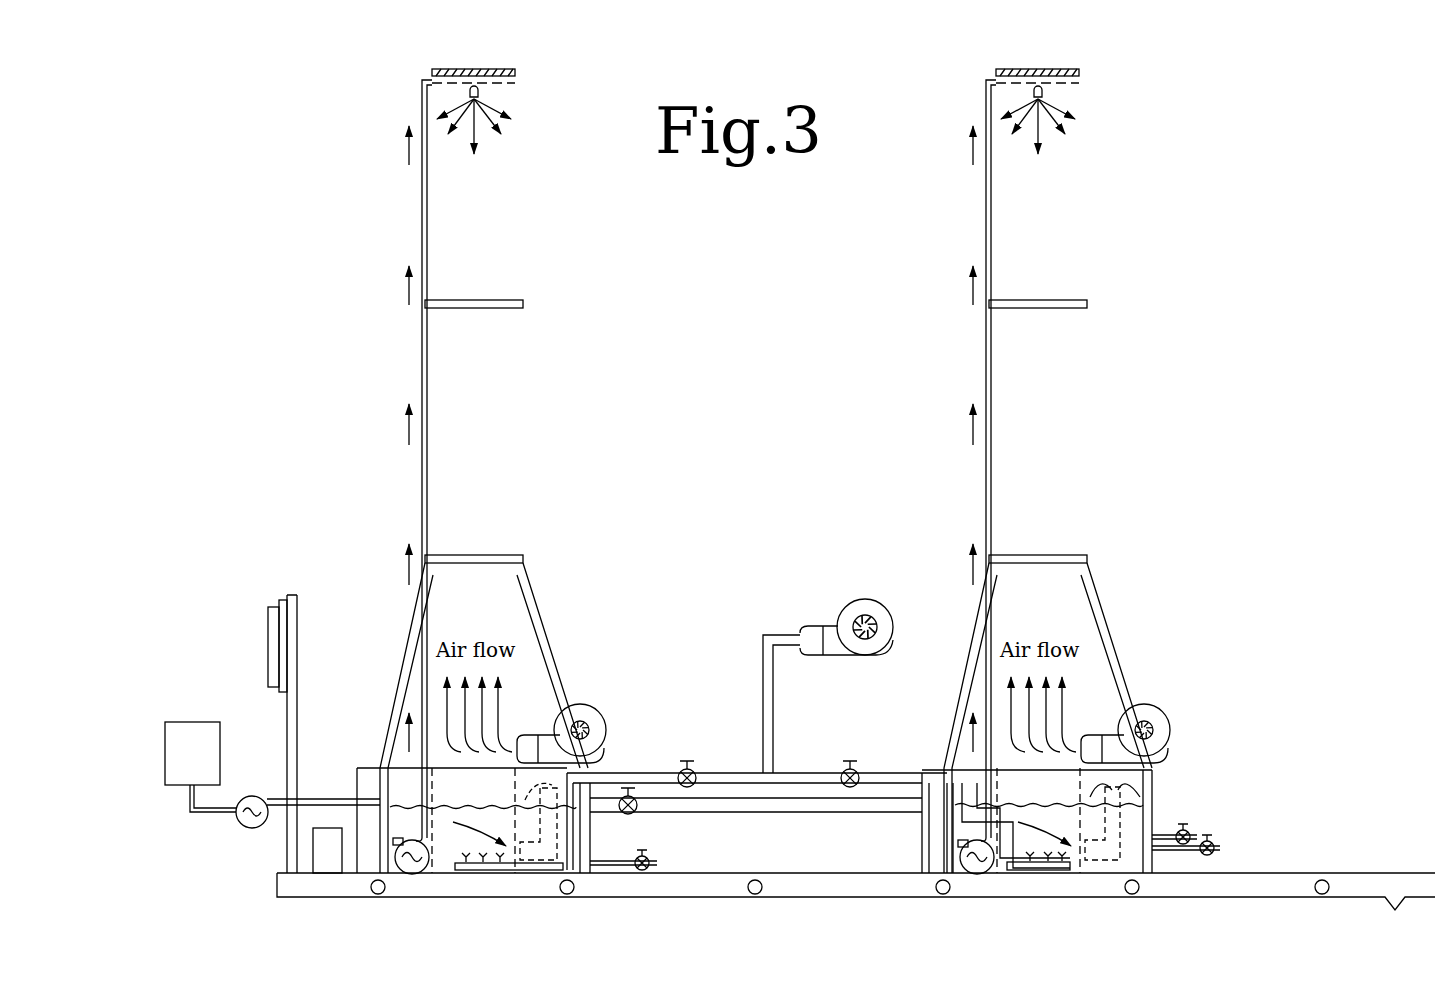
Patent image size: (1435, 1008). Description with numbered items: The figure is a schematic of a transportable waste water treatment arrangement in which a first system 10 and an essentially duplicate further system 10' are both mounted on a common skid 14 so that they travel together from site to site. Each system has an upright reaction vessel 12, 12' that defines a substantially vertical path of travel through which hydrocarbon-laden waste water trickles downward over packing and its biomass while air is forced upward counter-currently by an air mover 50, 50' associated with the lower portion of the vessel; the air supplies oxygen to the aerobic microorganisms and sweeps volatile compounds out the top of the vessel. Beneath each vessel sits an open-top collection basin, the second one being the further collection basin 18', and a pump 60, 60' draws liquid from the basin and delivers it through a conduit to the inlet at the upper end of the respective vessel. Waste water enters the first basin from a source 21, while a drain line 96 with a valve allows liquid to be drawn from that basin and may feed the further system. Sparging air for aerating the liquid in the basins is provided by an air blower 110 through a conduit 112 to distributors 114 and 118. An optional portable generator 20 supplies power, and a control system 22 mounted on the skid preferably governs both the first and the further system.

The transportable system 10 is at (533, 471).
The further system 10' is at (1099, 471).
The reaction vessel 12 is at (499, 471).
The further reaction vessel 12' is at (1079, 471).
The skid 14 is at (540, 897).
The further collection basin 18' is at (1173, 818).
The portable generator 20 is at (313, 847).
The source of waste water 21 is at (192, 722).
The control system 22 is at (298, 672).
The air mover 50 is at (602, 720).
The further air mover 50' is at (1167, 720).
The pump 60 is at (417, 888).
The further pump 60' is at (1007, 888).
The drain line 96 is at (623, 862).
The air blower 110 is at (861, 598).
The conduit 112 is at (782, 813).
The distributor 114 is at (484, 871).
The distributor 118 is at (1056, 871).